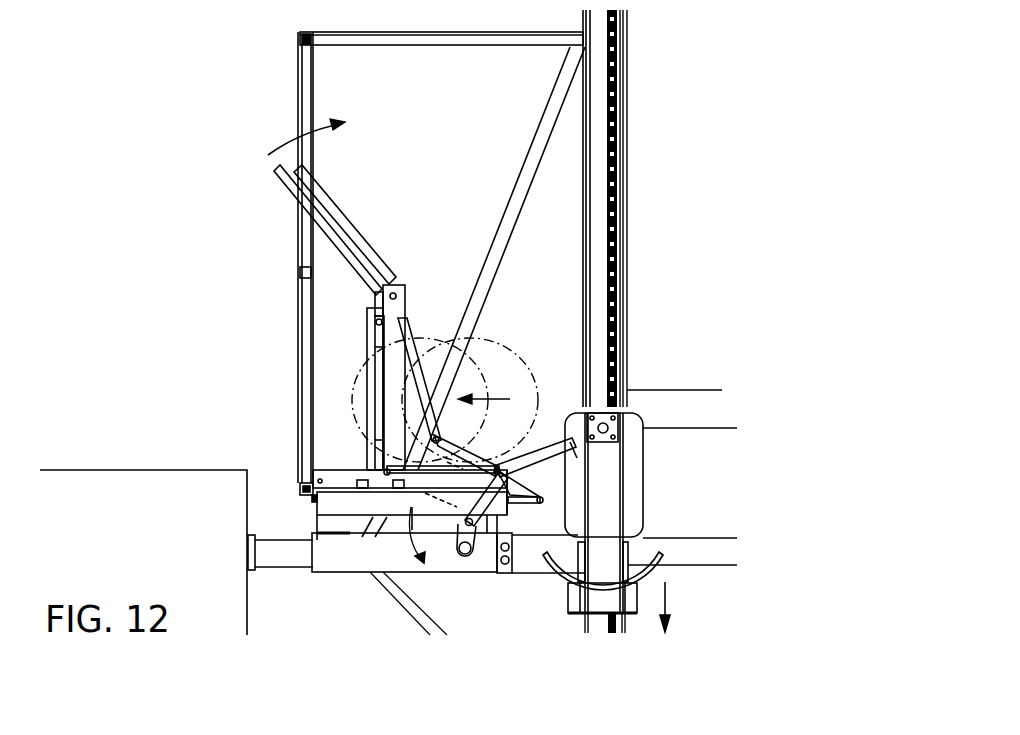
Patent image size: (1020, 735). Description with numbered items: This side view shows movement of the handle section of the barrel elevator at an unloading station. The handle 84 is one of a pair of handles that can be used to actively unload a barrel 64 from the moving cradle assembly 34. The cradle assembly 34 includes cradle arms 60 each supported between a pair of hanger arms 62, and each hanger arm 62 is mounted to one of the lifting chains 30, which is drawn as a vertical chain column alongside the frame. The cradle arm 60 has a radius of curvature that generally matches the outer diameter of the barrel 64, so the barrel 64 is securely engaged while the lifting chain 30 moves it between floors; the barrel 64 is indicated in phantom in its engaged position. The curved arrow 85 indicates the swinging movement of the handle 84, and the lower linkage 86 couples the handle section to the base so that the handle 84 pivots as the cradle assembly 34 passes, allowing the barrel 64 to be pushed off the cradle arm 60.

The lifting chain 30 is at (617, 242).
The cradle assembly 34 is at (658, 490).
The cradle arm 60 is at (650, 553).
The hanger arm 62 is at (605, 473).
The barrel 64 is at (357, 392).
The handle 84 is at (323, 200).
The rotation direction arrow 85 is at (318, 128).
The lower link 86 is at (443, 517).